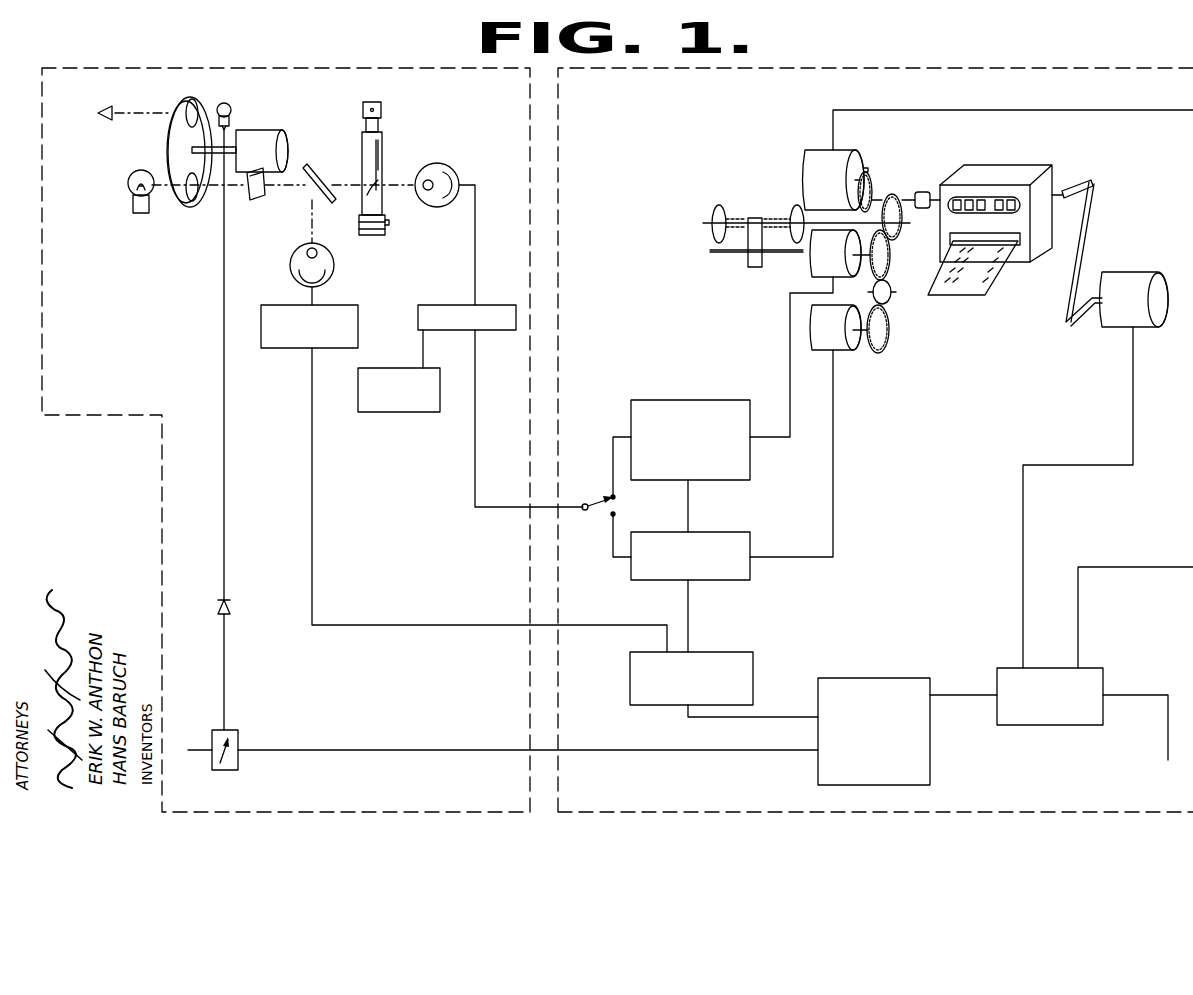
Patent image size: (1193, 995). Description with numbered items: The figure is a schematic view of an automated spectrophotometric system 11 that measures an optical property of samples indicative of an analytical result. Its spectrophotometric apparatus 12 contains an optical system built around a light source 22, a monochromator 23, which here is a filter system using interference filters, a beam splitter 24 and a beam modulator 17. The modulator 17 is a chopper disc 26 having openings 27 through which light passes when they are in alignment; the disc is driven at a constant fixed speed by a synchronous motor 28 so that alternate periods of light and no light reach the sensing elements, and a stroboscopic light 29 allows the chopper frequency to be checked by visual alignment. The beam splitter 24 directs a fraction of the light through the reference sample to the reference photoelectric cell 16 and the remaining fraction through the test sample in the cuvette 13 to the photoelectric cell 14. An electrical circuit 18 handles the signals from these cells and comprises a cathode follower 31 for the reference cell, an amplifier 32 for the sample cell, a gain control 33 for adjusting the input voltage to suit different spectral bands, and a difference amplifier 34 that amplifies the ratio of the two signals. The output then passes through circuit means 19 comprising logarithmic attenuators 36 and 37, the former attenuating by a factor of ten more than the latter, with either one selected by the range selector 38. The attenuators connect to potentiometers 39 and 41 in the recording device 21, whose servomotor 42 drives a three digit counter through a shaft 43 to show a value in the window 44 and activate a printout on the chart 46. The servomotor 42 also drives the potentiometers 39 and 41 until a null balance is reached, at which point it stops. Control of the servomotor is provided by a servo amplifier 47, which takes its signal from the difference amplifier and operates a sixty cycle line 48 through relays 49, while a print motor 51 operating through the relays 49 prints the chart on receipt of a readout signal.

The automated spectrophotometric system 11 is at (829, 49).
The spectrophotometric apparatus 12 is at (200, 175).
The sample container or cuvette 13 is at (396, 134).
The photoelectric cell 14 is at (454, 170).
The reference photoelectric cell 16 is at (336, 268).
The beam modulator 17 is at (143, 153).
The electrical circuit 18 is at (306, 392).
The circuit means 19 is at (757, 505).
The recording device 21 is at (940, 320).
The light source 22 is at (127, 187).
The monochromator 23 is at (250, 201).
The beam splitter 24 is at (308, 172).
The chopper disc 26 is at (212, 116).
The openings 27 is at (189, 100).
The synchronous motor 28 is at (277, 135).
The stroboscopic light 29 is at (234, 113).
The cathode follower 31 is at (360, 323).
The amplifier 32 is at (485, 304).
The gain control 33 is at (410, 413).
The difference amplifier 34 is at (756, 667).
The logarithmic attenuator 36 is at (752, 463).
The logarithmic attenuator 37 is at (753, 549).
The range selector 38 is at (598, 496).
The potentiometer 39 is at (810, 265).
The potentiometer 41 is at (830, 352).
The servomotor 42 is at (810, 165).
The shaft 43 is at (918, 190).
The window 44 is at (982, 200).
The chart 46 is at (990, 286).
The servo amplifier 47 is at (876, 678).
The 60 cycle line 48 is at (784, 748).
The relays 49 is at (1066, 668).
The print motor 51 is at (1140, 280).